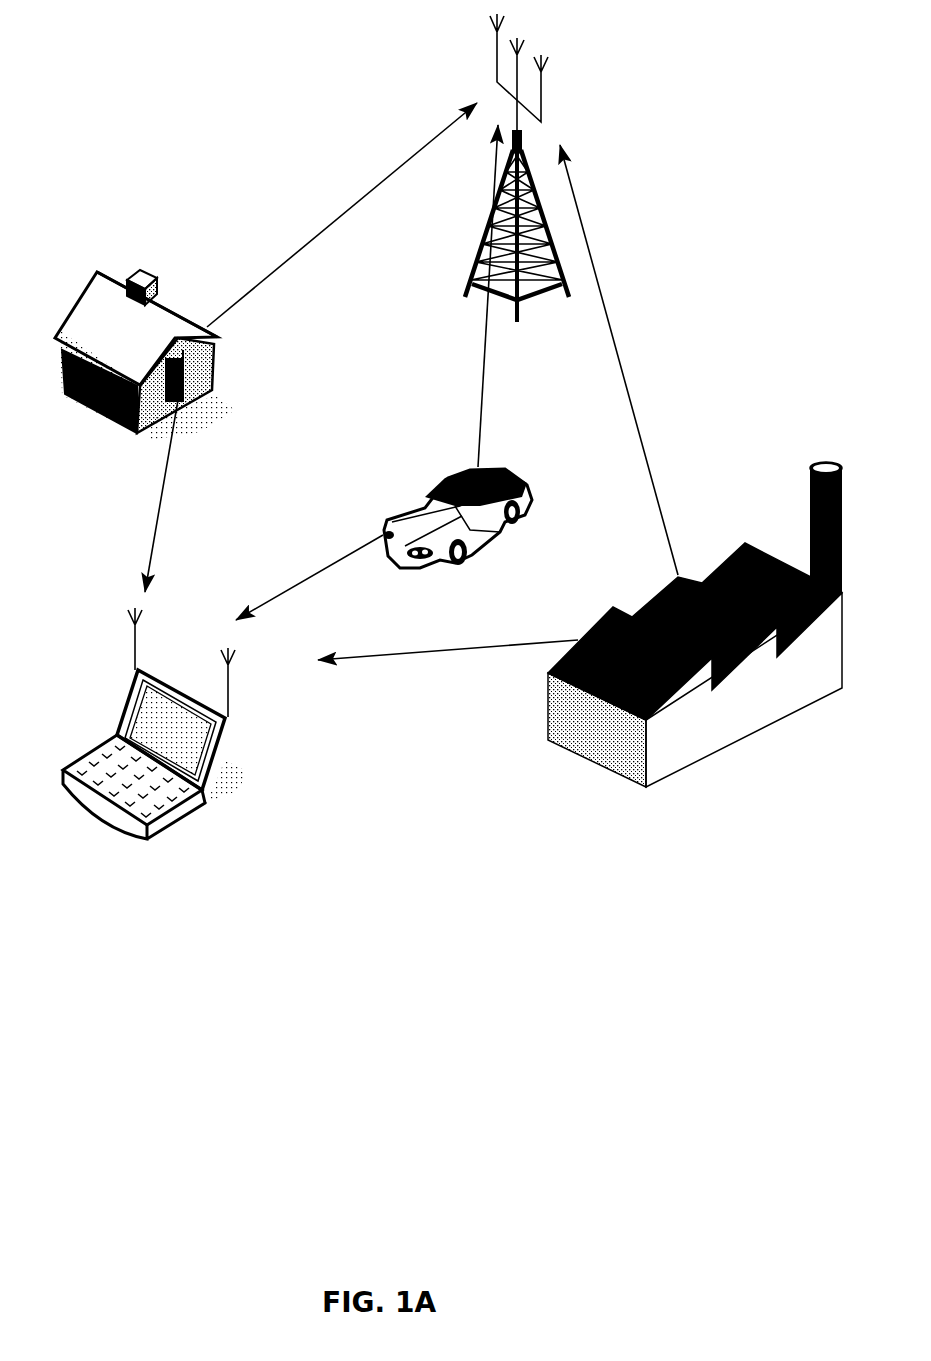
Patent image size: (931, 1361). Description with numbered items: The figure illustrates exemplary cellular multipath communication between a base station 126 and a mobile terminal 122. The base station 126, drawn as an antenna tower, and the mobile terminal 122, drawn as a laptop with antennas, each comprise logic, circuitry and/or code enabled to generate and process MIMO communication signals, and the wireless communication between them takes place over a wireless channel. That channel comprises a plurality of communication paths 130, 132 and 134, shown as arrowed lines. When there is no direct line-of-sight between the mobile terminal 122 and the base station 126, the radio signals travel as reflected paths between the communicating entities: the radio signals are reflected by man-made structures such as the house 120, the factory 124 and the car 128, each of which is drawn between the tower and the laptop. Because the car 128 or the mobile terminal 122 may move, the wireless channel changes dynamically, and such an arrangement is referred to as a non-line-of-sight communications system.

The house 120 is at (97, 272).
The mobile terminal 122 is at (220, 742).
The factory 124 is at (662, 778).
The base station 126 is at (517, 322).
The car 128 is at (460, 560).
The communication path 130 is at (275, 270).
The communication path 132 is at (480, 417).
The communication path 134 is at (628, 393).